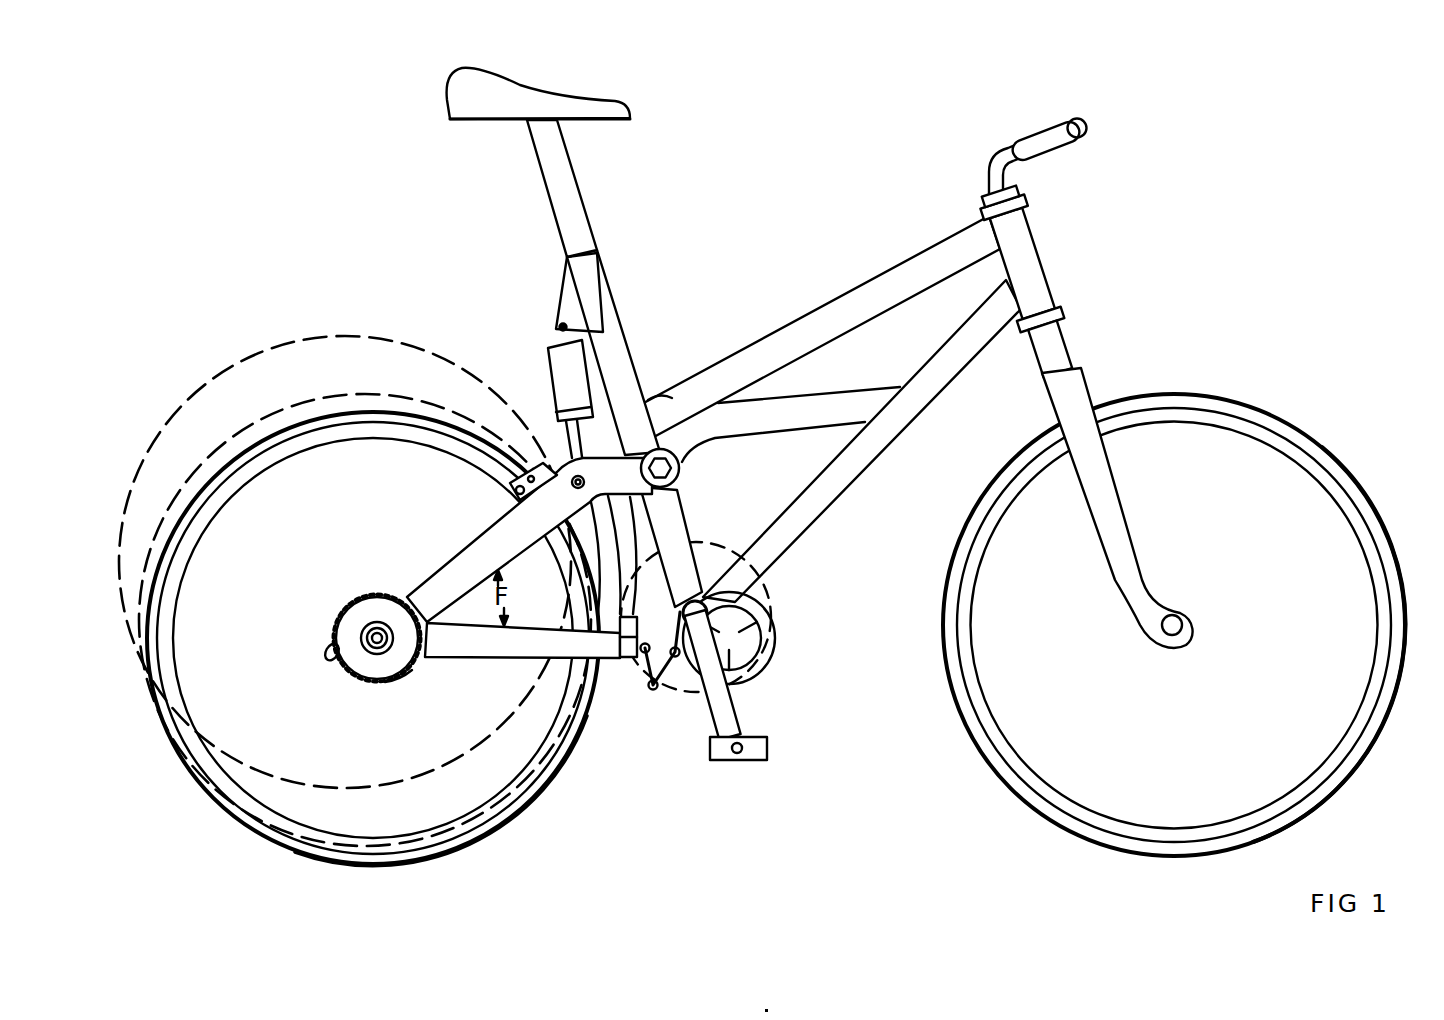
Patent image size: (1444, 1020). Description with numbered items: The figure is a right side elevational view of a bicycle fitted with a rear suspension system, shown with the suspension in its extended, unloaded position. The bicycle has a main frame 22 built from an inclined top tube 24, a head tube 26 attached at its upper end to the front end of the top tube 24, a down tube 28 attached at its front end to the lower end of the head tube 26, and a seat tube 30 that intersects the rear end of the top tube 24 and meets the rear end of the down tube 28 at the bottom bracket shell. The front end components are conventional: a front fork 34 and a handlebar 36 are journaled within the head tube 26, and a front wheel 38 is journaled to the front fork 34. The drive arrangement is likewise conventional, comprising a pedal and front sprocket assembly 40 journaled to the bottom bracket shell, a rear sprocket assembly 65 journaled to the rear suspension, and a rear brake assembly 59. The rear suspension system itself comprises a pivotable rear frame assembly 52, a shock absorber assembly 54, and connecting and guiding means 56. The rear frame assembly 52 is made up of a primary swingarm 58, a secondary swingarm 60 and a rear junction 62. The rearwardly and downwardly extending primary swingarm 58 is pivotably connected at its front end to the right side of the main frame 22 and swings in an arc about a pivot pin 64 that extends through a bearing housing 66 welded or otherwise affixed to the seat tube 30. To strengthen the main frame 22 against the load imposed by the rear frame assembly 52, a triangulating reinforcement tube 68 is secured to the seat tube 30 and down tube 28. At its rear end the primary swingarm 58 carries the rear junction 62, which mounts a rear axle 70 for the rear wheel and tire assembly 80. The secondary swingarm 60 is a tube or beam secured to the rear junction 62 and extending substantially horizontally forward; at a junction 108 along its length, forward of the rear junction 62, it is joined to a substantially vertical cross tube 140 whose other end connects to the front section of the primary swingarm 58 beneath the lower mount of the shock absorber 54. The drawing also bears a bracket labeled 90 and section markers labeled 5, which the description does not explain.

The main frame 22 is at (597, 250).
The top tube 24 is at (893, 278).
The head tube 26 is at (1040, 247).
The down tube 28 is at (862, 455).
The seat tube 30 is at (612, 347).
The front fork 34 is at (1068, 344).
The handlebar 36 is at (1042, 125).
The front wheel 38 is at (1297, 425).
The pedal and front sprocket assembly 40 is at (748, 720).
The pivotable rear frame assembly 52 is at (410, 605).
The shock absorber assembly 54 is at (547, 383).
The connecting and guiding means 56 is at (655, 686).
The primary swingarm 58 is at (492, 551).
The rear brake assembly 59 is at (480, 413).
The secondary swingarm 60 is at (470, 652).
The rear junction 62 is at (415, 652).
The pivot pin 64 is at (683, 474).
The rear sprocket assembly 65 is at (363, 637).
The bearing housing 66 is at (662, 408).
The triangulating reinforcement tube 68 is at (805, 412).
The rear axle 70 is at (357, 636).
The rear wheel and tire assembly 80 is at (500, 830).
The mounting bracket 90 is at (570, 305).
The junction 108 is at (620, 643).
The cross tube 140 is at (600, 575).
The section line 5 is at (219, 638).